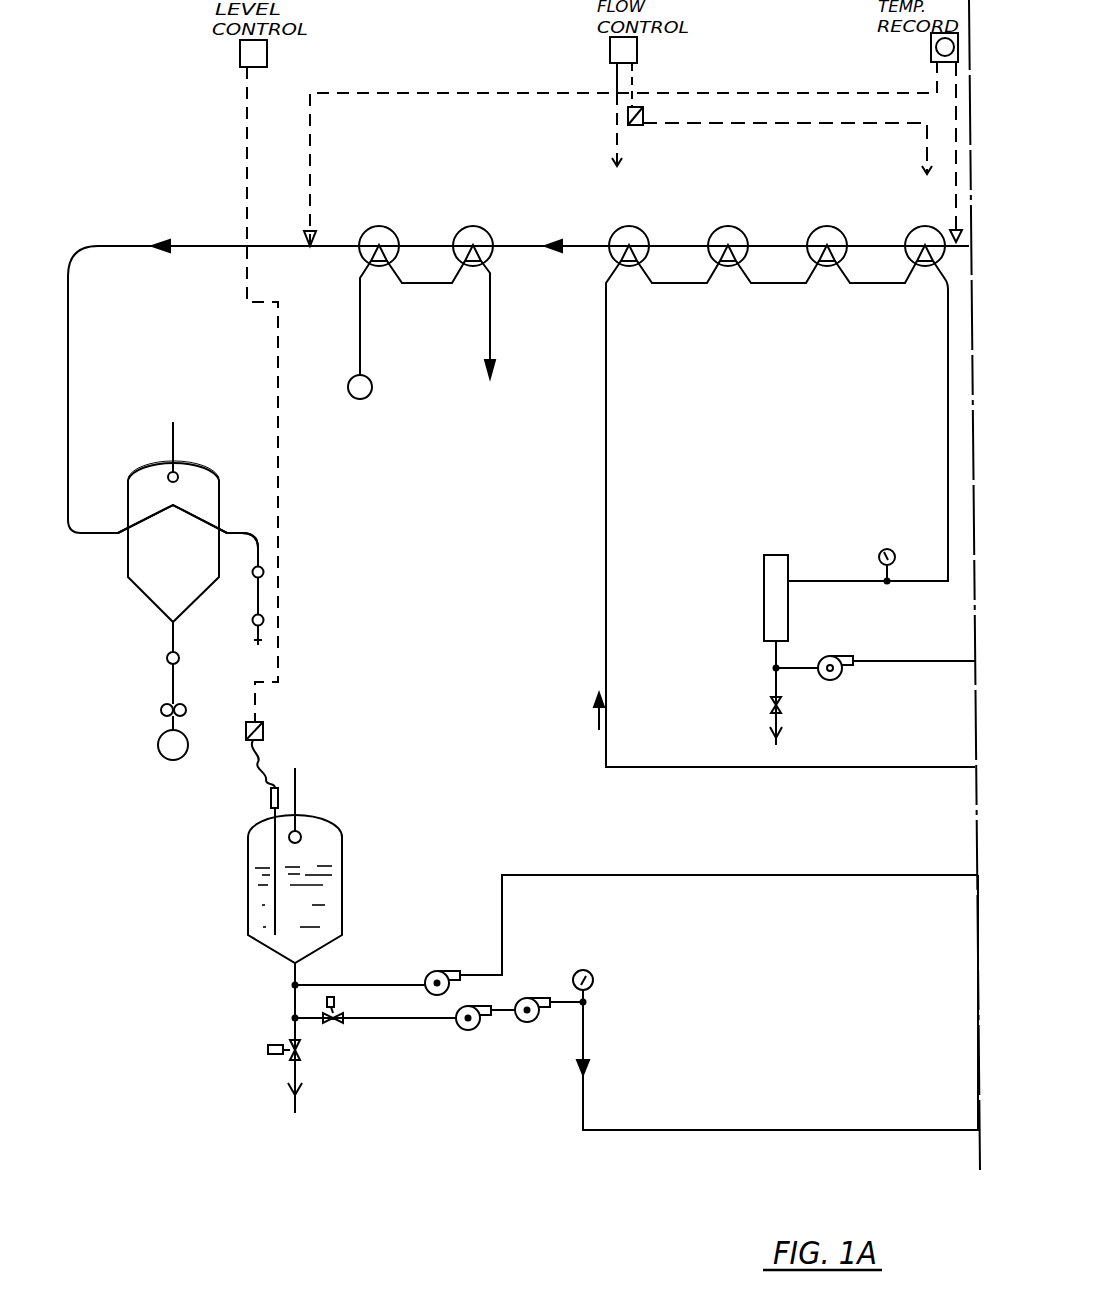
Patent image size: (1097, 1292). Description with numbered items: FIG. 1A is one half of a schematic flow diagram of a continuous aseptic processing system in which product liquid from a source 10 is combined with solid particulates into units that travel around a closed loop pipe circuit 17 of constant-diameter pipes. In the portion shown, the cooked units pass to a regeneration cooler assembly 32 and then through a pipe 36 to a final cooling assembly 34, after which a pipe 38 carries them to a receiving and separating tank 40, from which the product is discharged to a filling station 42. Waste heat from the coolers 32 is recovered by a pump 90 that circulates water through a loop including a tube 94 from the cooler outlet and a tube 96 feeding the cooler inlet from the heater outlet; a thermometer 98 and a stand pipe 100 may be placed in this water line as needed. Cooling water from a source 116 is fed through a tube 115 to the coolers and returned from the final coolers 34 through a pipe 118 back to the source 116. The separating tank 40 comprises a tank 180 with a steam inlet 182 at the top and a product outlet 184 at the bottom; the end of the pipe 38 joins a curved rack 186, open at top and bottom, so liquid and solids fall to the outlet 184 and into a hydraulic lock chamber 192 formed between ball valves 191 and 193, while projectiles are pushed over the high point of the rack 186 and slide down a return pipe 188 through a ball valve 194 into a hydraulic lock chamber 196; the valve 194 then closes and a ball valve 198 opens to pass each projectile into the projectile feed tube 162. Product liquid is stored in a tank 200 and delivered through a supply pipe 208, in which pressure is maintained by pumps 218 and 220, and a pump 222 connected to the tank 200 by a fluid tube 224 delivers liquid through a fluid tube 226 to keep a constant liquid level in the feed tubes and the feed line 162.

The source of product liquid 10 is at (362, 836).
The closed loop pipe circuit 17 is at (138, 233).
The regeneration cooler assembly 32 is at (822, 224).
The final cooling assembly 34 is at (462, 223).
The pipe 36 is at (538, 248).
The pipe 38 is at (240, 222).
The receiving and separating tank 40 is at (133, 466).
The filling station 42 is at (162, 756).
The pump 90 is at (862, 620).
The tube 94 is at (948, 342).
The tube 96 is at (607, 395).
The thermometer 98 is at (920, 522).
The stand pipe 100 is at (764, 603).
The tube 115 is at (360, 333).
The cooling water source 116 is at (372, 384).
The pipe 118 is at (492, 335).
The projectile feed tube 162 is at (256, 641).
The tank 180 is at (219, 471).
The steam inlet 182 is at (176, 441).
The product outlet 184 is at (172, 642).
The curved rack 186 is at (190, 511).
The return pipe 188 is at (250, 516).
The ball valve 191 is at (167, 658).
The hydraulic lock chamber 192 is at (170, 688).
The ball valve 193 is at (161, 712).
The ball valve 194 is at (264, 572).
The hydraulic lock chamber 196 is at (258, 598).
The ball valve 198 is at (264, 620).
The tank 200 is at (248, 838).
The supply pipe 208 is at (385, 1020).
The pump 218 is at (468, 1032).
The pump 220 is at (527, 1023).
The pump 222 is at (440, 970).
The fluid tube 224 is at (405, 962).
The fluid tube 226 is at (533, 850).